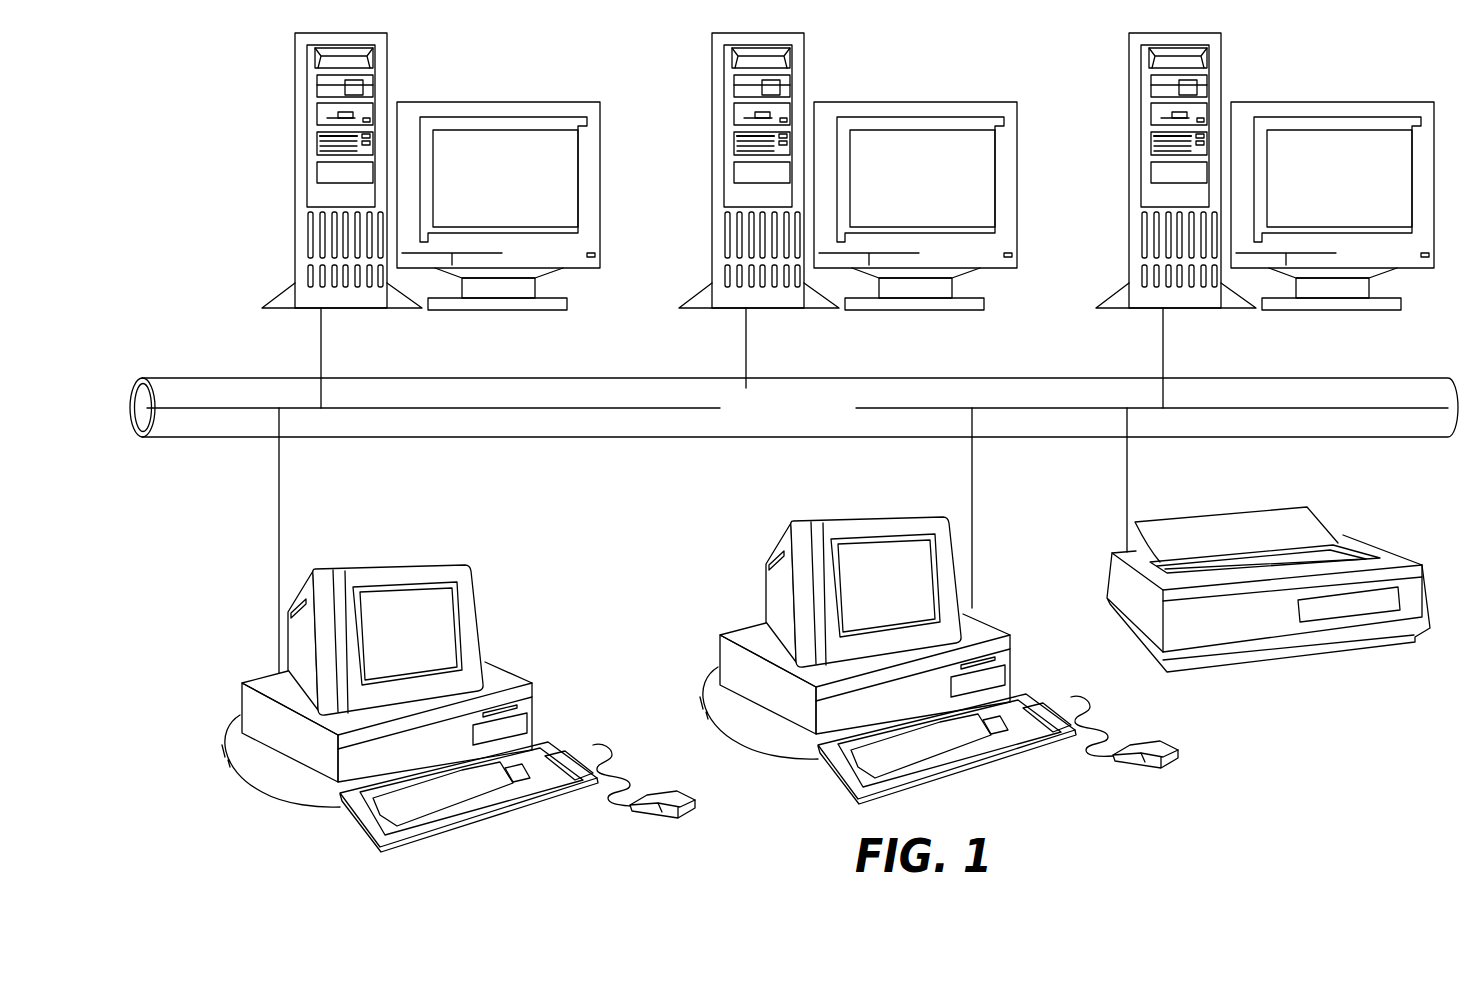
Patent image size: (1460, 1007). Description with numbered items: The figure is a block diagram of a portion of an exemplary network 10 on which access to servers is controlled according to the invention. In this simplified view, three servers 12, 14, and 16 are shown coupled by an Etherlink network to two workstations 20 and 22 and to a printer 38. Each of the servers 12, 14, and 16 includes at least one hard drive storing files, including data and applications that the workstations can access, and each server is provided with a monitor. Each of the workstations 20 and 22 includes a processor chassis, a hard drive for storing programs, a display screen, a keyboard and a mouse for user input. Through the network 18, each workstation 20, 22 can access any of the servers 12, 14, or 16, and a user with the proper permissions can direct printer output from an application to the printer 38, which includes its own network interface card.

The network 10 is at (1307, 749).
The server 12 is at (298, 238).
The server 14 is at (756, 170).
The server 16 is at (1167, 170).
The network 18 is at (557, 432).
The workstation 20 is at (474, 710).
The workstation 22 is at (953, 646).
The printer 38 is at (1110, 578).